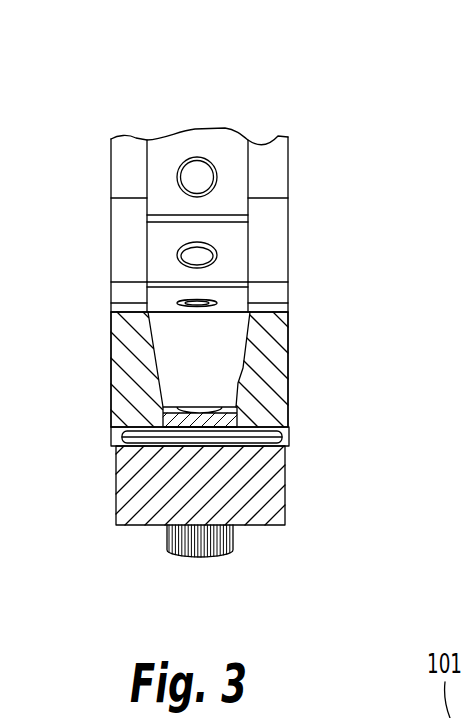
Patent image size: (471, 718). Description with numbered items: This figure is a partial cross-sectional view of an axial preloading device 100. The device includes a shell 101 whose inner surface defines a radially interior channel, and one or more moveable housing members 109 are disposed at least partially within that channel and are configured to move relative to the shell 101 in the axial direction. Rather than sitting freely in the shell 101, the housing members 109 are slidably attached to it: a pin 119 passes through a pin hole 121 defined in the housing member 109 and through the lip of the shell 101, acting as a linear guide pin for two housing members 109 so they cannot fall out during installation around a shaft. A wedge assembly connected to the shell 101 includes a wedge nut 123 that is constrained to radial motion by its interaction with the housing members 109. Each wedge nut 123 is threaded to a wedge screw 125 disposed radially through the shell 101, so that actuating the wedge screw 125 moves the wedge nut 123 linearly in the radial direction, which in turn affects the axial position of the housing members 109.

The axial preloading device 100 is at (353, 168).
The shell 101 is at (289, 488).
The moveable housing member 109 is at (273, 338).
The pin 119 is at (270, 417).
The pin hole 121 is at (113, 438).
The wedge nut 123 is at (222, 366).
The wedge screw 125 is at (196, 176).